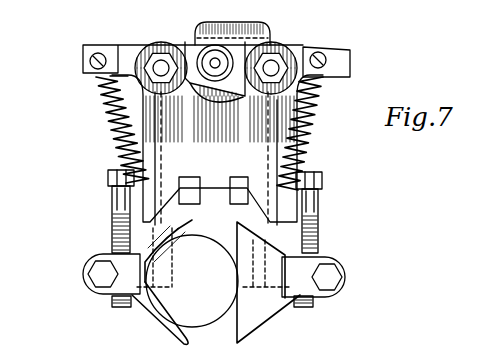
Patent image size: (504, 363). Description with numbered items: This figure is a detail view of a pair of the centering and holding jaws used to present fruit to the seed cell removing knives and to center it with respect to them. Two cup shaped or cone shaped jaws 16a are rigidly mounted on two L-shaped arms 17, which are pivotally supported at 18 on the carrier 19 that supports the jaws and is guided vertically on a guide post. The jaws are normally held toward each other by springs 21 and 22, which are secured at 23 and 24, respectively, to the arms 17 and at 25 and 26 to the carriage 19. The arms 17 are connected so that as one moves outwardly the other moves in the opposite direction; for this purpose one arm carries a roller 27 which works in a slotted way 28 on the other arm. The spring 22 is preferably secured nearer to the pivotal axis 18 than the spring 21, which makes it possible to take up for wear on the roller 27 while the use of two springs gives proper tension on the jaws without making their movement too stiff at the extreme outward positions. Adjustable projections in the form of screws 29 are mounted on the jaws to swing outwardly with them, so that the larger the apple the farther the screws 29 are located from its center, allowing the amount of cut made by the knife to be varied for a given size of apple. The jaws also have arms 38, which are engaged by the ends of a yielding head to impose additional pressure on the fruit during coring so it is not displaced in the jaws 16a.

The cup shaped or cone shaped jaws 16a is at (112, 246).
The L-shaped arms 17 is at (145, 113).
The pivotal support 18 is at (137, 43).
The carrier 19 is at (153, 142).
The spring 21 is at (100, 88).
The spring 22 is at (320, 112).
The spring securing point 23 is at (90, 61).
The spring securing point 24 is at (326, 60).
The spring securing point 25 is at (110, 218).
The spring securing point 26 is at (318, 200).
The roller 27 is at (197, 44).
The slotted way 28 is at (218, 60).
The adjustable screws 29 is at (118, 198).
The arms of the jaws 38 is at (113, 46).